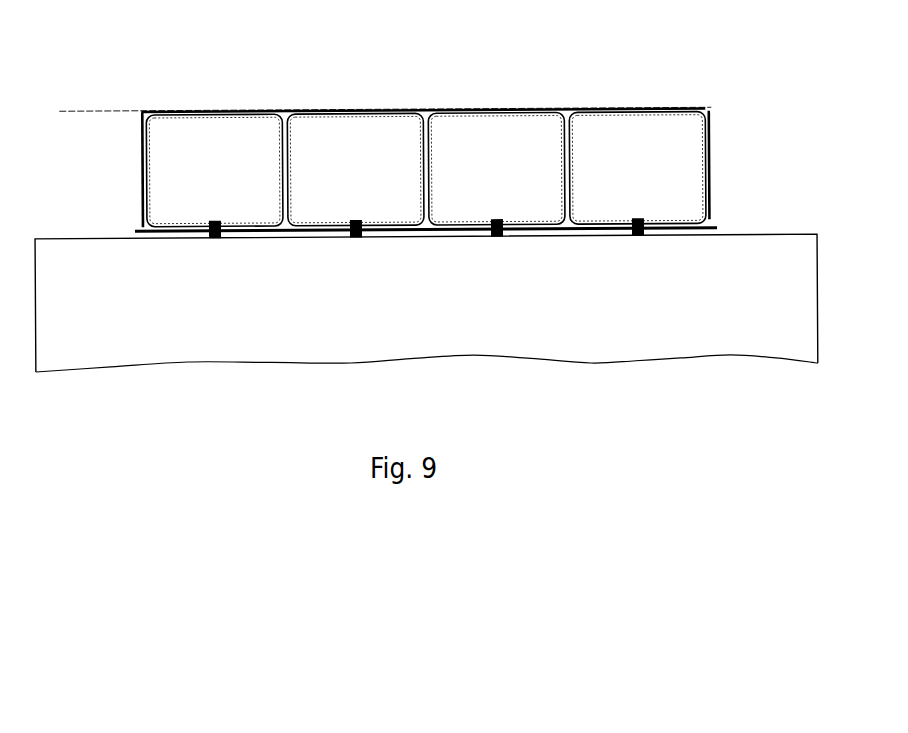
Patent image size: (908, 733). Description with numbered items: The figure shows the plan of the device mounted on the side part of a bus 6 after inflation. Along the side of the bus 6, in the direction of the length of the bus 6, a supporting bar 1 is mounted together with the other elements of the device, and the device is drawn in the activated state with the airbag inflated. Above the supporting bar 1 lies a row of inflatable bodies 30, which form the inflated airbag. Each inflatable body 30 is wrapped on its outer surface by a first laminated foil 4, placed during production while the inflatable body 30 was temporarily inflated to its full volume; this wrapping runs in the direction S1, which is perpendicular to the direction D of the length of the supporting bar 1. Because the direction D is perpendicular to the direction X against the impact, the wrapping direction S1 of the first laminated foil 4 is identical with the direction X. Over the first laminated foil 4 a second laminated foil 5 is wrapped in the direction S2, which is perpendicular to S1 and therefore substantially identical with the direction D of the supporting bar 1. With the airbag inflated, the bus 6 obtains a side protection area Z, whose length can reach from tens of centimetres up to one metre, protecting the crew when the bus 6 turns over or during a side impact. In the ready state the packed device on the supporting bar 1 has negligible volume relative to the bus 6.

The supporting bar 1 is at (717, 228).
The first laminated foil 4 is at (682, 108).
The second laminated foil 5 is at (712, 138).
The bus 6 is at (790, 285).
The inflatable body 30 is at (245, 135).
The direction of wrapping of the first laminated foil S1 is at (190, 130).
The direction of wrapping of the second laminated foil S2 is at (162, 157).
The direction against the impact X is at (425, 80).
The side protection area Z is at (70, 109).
The direction of the length of the supporting bar D is at (473, 256).